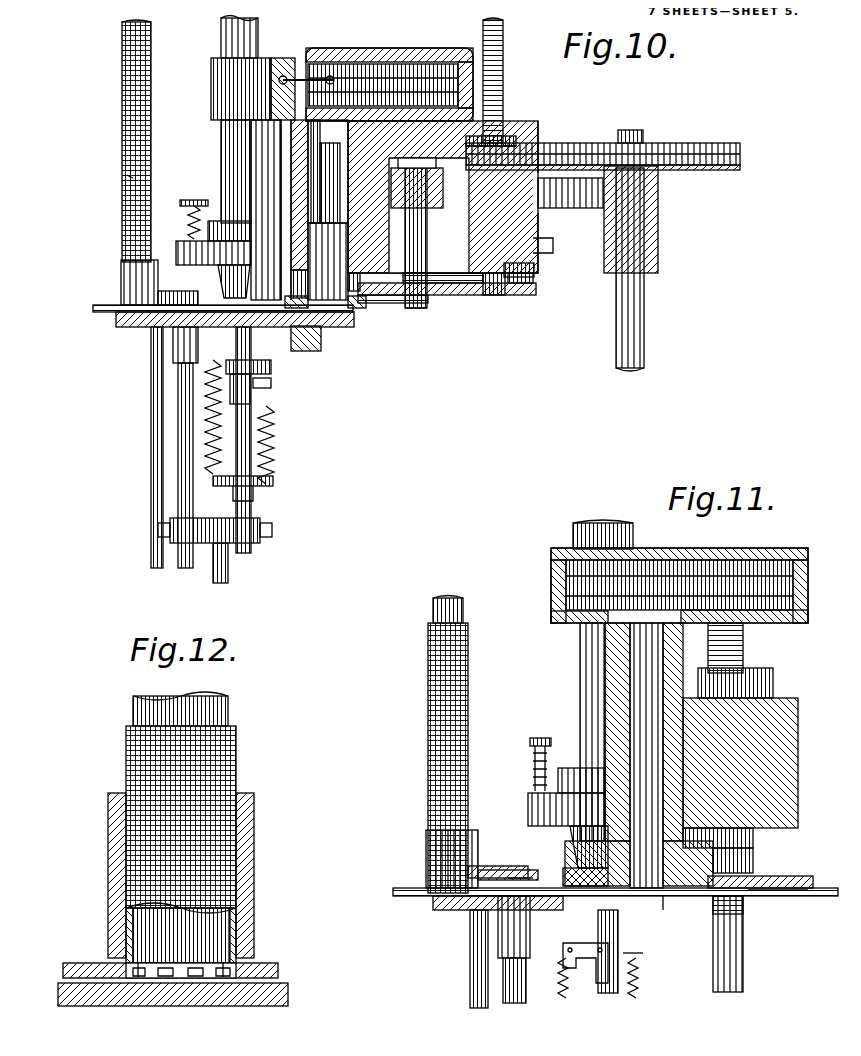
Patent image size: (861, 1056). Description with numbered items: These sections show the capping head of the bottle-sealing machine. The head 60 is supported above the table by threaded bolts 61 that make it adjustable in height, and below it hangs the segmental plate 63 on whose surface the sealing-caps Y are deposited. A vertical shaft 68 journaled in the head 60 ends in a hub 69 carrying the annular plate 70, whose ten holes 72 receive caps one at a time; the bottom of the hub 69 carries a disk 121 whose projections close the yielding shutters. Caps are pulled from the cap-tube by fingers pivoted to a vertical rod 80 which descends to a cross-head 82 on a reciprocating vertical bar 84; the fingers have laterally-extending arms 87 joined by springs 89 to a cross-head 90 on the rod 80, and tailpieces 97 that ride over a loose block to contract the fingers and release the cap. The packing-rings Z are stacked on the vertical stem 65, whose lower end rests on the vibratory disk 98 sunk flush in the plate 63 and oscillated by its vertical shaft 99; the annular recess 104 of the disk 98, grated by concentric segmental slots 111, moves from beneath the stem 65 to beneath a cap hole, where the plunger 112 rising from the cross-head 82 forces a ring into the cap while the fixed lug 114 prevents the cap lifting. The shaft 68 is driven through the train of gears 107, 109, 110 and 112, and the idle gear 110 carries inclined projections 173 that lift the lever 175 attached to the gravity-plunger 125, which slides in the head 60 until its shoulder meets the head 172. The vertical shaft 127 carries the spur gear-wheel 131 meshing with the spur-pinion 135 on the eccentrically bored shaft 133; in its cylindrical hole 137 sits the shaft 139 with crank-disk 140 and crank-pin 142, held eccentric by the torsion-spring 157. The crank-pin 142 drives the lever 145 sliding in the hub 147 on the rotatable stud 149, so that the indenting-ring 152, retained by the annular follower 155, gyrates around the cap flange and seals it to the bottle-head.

In FIG. 10, the head 60 is at (642, 210).
In FIG. 11, the head 60 is at (783, 754).
In FIG. 11, the bolts 61 is at (735, 924).
In FIG. 10, the segmental plate 63 is at (112, 312).
In FIG. 12, the segmental plate 63 is at (280, 987).
In FIG. 11, the segmental plate 63 is at (435, 904).
In FIG. 10, the vertical stem 65 is at (140, 18).
In FIG. 12, the vertical stem 65 is at (220, 699).
In FIG. 11, the vertical stem 65 is at (455, 606).
In FIG. 11, the vertical shaft 68 is at (643, 654).
In FIG. 11, the hub 69 is at (563, 862).
In FIG. 10, the annular plate 70 is at (356, 298).
In FIG. 11, the annular plate 70 is at (520, 870).
In FIG. 11, the holes 72 is at (770, 884).
In FIG. 10, the vertical rod 80 is at (244, 434).
In FIG. 11, the vertical rod 80 is at (595, 985).
In FIG. 10, the cross-head 82 is at (195, 537).
In FIG. 10, the vertical bar 84 is at (214, 574).
In FIG. 10, the laterally-extending arms 87 is at (190, 384).
In FIG. 11, the laterally-extending arms 87 is at (600, 952).
In FIG. 10, the springs 89 is at (268, 394).
In FIG. 11, the springs 89 is at (626, 988).
In FIG. 10, the cross-head 90 is at (265, 478).
In FIG. 10, the tailpieces 97 is at (197, 414).
In FIG. 11, the tailpieces 97 is at (563, 982).
In FIG. 10, the vibratory disk 98 is at (85, 302).
In FIG. 12, the vibratory disk 98 is at (270, 960).
In FIG. 11, the vibratory disk 98 is at (385, 885).
In FIG. 10, the vertical shaft 99 is at (143, 480).
In FIG. 11, the vertical shaft 99 is at (462, 959).
In FIG. 12, the annular recess 104 is at (230, 975).
In FIG. 11, the gear 107 is at (570, 580).
In FIG. 10, the idler gear 109 is at (168, 335).
In FIG. 10, the idle spur gear-wheel 110 is at (436, 44).
In FIG. 12, the concentric segmental slots 111 is at (140, 972).
In FIG. 11, the vertically-reciprocating plunger 112 is at (520, 924).
In FIG. 10, the fixed lug 114 is at (113, 270).
In FIG. 12, the fixed lug 114 is at (246, 844).
In FIG. 11, the fixed lug 114 is at (418, 822).
In FIG. 11, the disk 121 is at (666, 901).
In FIG. 10, the gravity-plunger 125 is at (351, 305).
In FIG. 10, the vertical shaft 127 is at (636, 324).
In FIG. 10, the spur gear-wheel 131 is at (660, 135).
In FIG. 10, the shaft 133 is at (525, 245).
In FIG. 10, the spur-pinion 135 is at (500, 130).
In FIG. 10, the cylindrical hole 137 is at (523, 268).
In FIG. 10, the shaft 139 is at (447, 282).
In FIG. 10, the crank-disk 140 is at (508, 290).
In FIG. 10, the crank-pin 142 is at (484, 290).
In FIG. 10, the lever 145 is at (523, 288).
In FIG. 10, the hub 147 is at (416, 287).
In FIG. 10, the vertical rotatable stud 149 is at (410, 148).
In FIG. 10, the indenting-ring 152 is at (370, 295).
In FIG. 10, the annular follower 155 is at (250, 202).
In FIG. 10, the torsion-spring 157 is at (495, 82).
In FIG. 10, the head 172 is at (348, 126).
In FIG. 10, the inclined projections 173 is at (407, 42).
In FIG. 10, the lever 175 is at (332, 42).
In FIG. 10, the packing-rings Z is at (140, 176).
In FIG. 12, the packing-rings Z is at (118, 910).
In FIG. 11, the packing-rings Z is at (460, 706).
In FIG. 11, the sealing-caps Y is at (500, 872).